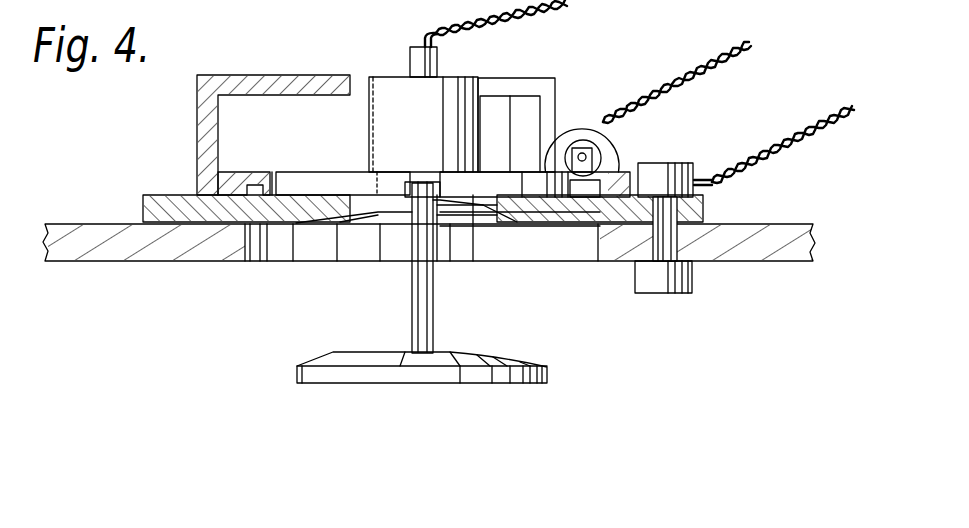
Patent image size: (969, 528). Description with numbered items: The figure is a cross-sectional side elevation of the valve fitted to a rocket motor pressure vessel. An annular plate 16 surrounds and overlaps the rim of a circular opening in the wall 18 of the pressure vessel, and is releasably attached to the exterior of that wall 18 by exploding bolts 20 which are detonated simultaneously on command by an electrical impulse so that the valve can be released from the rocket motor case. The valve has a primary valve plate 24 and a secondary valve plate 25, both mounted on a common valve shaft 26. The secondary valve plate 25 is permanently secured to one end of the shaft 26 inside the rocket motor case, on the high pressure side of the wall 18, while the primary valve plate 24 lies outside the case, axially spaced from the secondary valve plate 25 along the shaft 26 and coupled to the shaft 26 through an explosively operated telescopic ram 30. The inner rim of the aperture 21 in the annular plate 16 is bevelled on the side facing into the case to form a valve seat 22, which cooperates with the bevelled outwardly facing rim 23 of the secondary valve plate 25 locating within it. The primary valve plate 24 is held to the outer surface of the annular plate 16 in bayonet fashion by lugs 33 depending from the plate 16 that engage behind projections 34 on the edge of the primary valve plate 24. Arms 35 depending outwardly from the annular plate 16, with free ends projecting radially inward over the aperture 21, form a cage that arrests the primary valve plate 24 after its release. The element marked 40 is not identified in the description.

The annular plate 16 is at (168, 197).
The wall 18 is at (166, 248).
The exploding bolts 20 is at (668, 176).
The aperture 21 is at (383, 226).
The valve seat 22 is at (497, 207).
The bevelled outwardly facing rim 23 is at (519, 349).
The primary valve plate 24 is at (476, 226).
The secondary valve plate 25 is at (388, 362).
The valve shaft 26 is at (420, 289).
The explosively operated telescopic ram 30 is at (393, 100).
The lugs 33 is at (234, 182).
The projections 34 is at (413, 183).
The arms 35 is at (207, 100).
The sensor wheel 40 is at (582, 147).